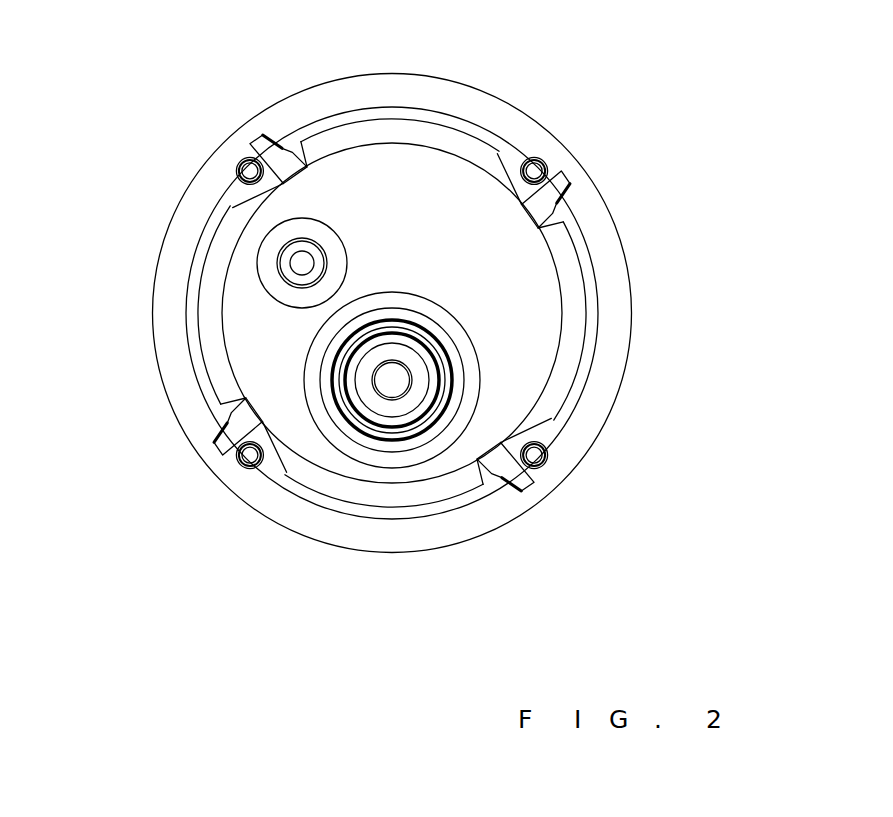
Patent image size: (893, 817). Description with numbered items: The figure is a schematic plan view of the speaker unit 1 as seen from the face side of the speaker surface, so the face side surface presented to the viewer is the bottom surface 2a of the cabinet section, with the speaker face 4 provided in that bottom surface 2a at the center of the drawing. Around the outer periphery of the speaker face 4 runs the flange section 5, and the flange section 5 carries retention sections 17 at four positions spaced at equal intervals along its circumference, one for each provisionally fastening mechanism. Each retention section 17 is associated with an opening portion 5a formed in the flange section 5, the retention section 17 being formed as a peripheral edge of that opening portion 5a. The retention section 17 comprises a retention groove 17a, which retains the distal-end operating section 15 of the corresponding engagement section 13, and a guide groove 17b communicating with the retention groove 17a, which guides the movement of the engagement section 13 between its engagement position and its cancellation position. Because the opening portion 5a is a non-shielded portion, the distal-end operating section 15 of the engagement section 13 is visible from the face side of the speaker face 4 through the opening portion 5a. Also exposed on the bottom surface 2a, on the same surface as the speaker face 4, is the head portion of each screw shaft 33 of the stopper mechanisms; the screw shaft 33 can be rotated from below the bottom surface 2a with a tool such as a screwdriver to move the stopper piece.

The speaker unit 1 is at (174, 132).
The bottom surface 2a is at (612, 336).
The speaker face 4 is at (397, 407).
The flange section 5 is at (314, 522).
The opening portion 5a is at (283, 140).
The engagement section 13 is at (428, 302).
The distal-end operating section 15 is at (257, 138).
The retention section 17 is at (275, 139).
The retention groove 17a is at (482, 470).
The guide groove 17b is at (505, 482).
The screw shaft 33 is at (540, 152).